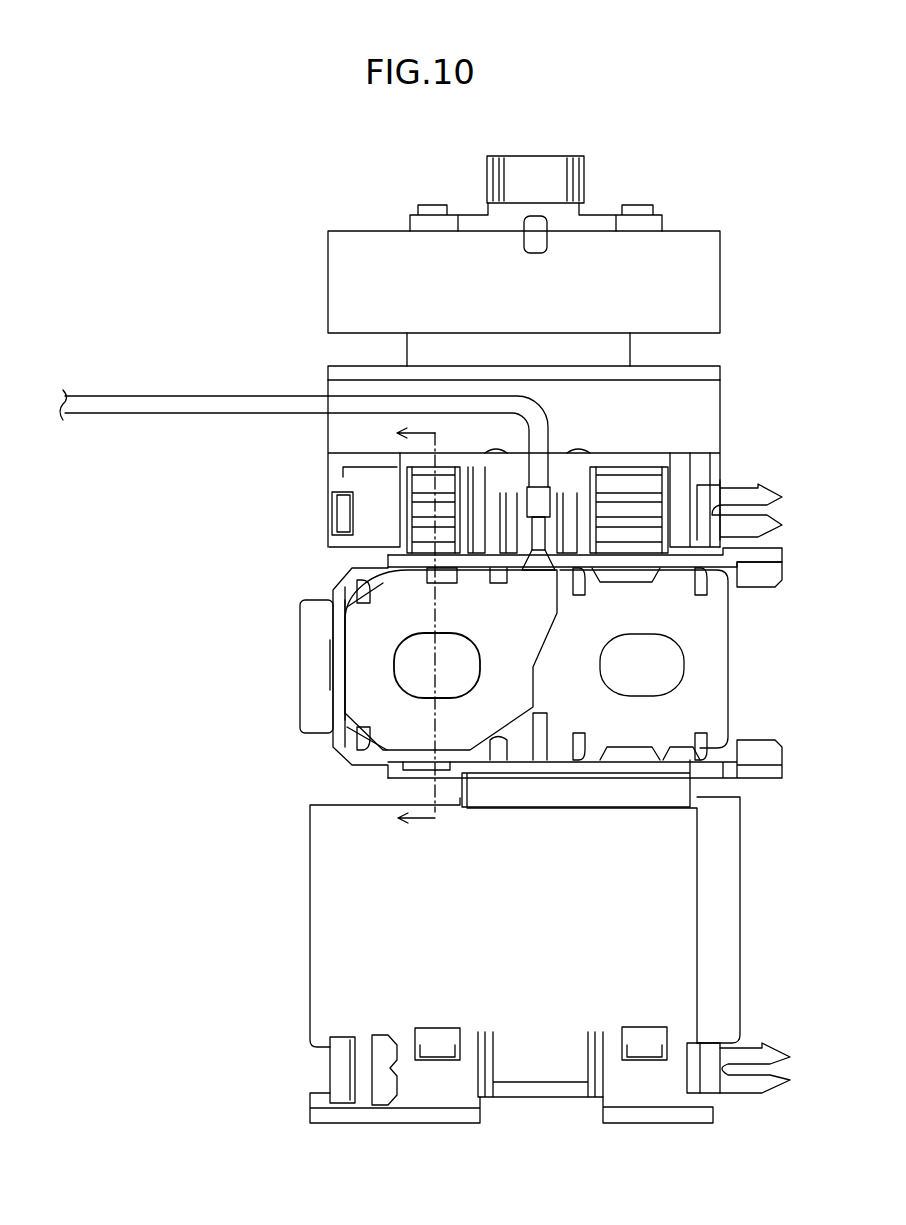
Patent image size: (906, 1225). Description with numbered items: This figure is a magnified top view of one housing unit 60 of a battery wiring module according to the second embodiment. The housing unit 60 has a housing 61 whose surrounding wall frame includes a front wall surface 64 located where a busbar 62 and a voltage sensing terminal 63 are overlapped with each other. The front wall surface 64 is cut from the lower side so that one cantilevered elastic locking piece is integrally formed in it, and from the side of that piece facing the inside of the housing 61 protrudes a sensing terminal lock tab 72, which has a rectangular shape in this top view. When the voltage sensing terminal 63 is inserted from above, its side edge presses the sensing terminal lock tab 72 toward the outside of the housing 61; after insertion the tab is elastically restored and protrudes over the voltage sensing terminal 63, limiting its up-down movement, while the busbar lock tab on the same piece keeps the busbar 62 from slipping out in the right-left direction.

The housing unit 60 is at (265, 238).
The housing 61 is at (270, 712).
The busbar 62 is at (715, 614).
The voltage sensing terminal 63 is at (377, 632).
The front wall surface 64 is at (350, 611).
The sensing terminal lock tab 72 is at (447, 577).